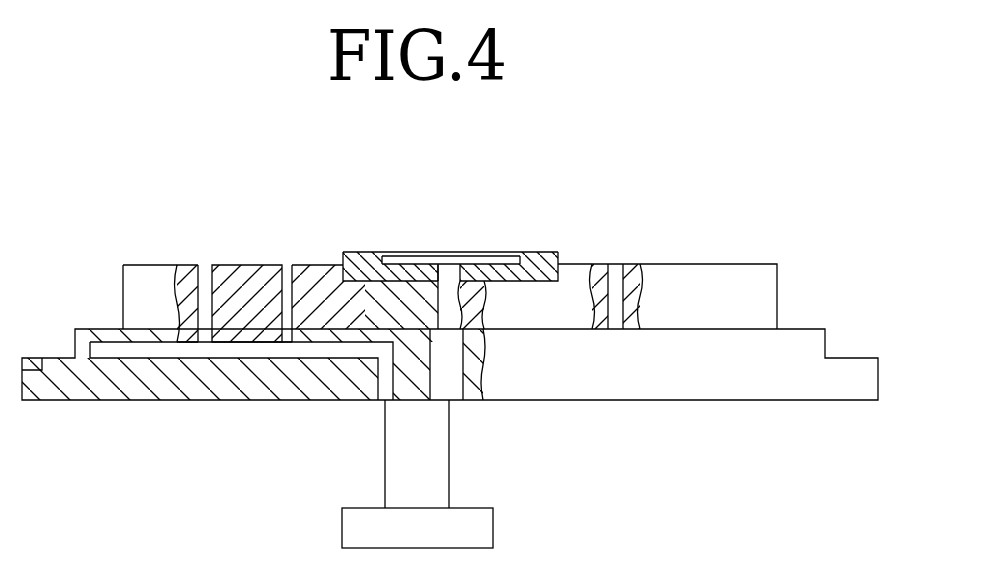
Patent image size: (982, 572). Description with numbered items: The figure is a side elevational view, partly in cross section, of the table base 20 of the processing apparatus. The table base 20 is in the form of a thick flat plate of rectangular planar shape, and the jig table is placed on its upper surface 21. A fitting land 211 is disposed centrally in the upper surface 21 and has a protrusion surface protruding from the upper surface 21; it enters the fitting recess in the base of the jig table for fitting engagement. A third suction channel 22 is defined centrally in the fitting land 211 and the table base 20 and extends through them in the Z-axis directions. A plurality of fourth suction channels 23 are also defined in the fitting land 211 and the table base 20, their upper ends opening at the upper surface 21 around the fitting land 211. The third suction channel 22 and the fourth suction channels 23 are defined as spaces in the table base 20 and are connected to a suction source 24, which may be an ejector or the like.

The table base 20 is at (812, 249).
The upper surface 21 is at (703, 264).
The fitting land 211 is at (558, 252).
The third suction channel 22 is at (460, 290).
The fourth suction channels 23 is at (205, 275).
The suction source 24 is at (493, 527).